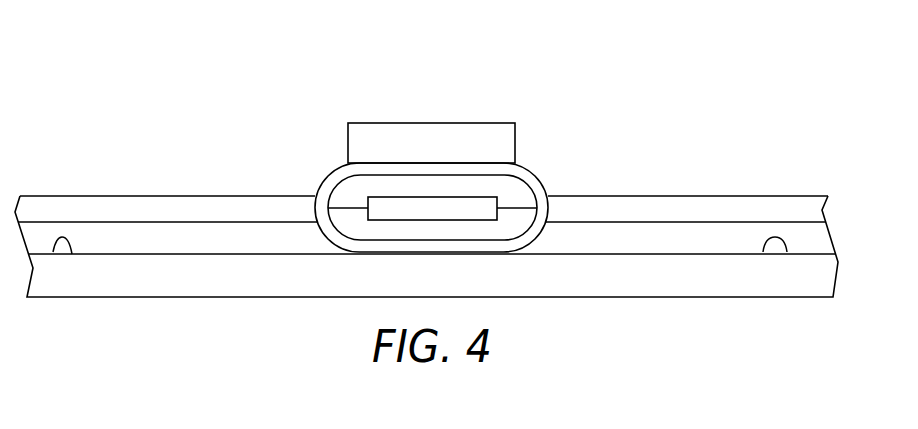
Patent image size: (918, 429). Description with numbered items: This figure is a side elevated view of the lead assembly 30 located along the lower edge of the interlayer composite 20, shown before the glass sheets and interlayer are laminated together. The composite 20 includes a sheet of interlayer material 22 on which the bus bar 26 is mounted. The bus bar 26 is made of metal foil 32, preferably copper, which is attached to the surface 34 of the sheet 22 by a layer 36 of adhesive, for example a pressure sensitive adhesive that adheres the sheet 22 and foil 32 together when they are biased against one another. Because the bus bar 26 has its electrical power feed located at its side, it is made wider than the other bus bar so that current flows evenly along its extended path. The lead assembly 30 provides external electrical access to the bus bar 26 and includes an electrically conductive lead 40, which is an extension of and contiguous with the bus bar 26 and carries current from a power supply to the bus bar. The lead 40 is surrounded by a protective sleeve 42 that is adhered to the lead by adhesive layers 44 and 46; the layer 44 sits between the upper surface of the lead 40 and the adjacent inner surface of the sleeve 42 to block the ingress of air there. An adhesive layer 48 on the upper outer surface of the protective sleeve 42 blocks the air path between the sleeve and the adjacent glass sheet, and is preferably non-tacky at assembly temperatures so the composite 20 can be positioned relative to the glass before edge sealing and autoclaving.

The interlayer composite 20 is at (757, 148).
The sheet of interlayer material 22 is at (163, 306).
The bus bar 26 is at (62, 185).
The lead assembly 30 is at (318, 105).
The metal foil 32 is at (115, 195).
The surface 34 is at (53, 252).
The layer of adhesive 36 is at (227, 240).
The electrically conductive lead 40 is at (397, 212).
The protective sleeve 42 is at (535, 172).
The adhesive layer 44 is at (422, 187).
The adhesive layer 46 is at (463, 232).
The adhesive layer 48 is at (478, 123).